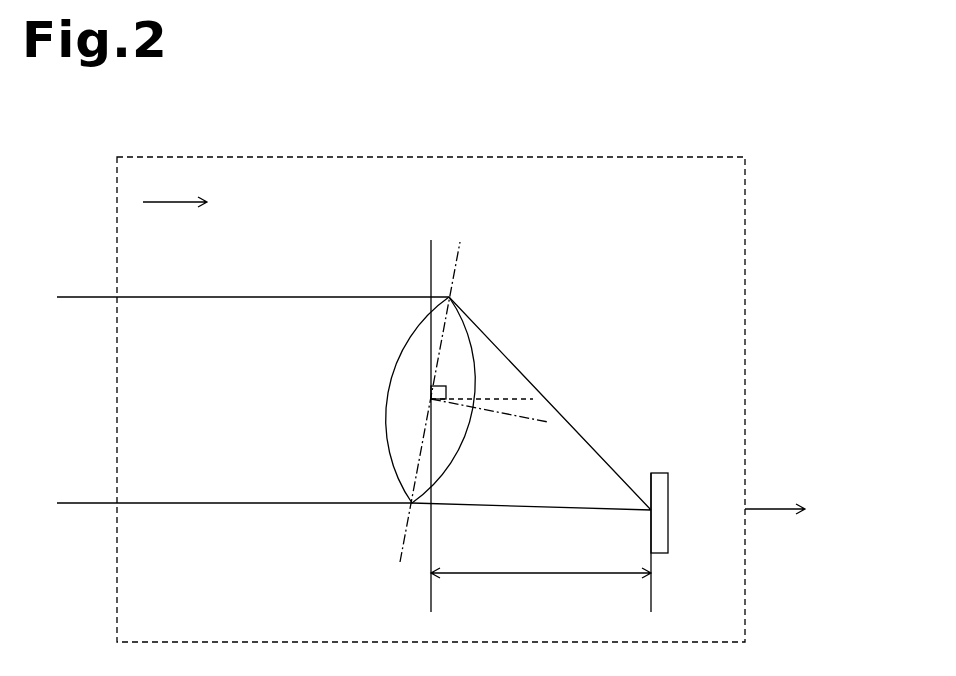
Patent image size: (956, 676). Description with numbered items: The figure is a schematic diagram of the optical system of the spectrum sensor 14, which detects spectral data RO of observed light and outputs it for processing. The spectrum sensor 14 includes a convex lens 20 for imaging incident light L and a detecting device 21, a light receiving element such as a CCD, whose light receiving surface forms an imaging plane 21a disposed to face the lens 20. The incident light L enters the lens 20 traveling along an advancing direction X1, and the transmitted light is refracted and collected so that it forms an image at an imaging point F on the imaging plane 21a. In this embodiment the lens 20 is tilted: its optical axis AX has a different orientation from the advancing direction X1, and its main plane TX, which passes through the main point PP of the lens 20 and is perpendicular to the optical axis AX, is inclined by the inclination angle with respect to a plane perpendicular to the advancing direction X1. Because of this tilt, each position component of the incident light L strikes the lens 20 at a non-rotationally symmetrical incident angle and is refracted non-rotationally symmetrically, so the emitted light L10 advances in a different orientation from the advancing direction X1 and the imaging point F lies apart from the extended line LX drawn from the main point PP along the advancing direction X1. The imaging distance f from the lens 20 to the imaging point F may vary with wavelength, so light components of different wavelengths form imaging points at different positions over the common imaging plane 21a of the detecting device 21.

The spectrum sensor 14 is at (709, 156).
The lens 20 is at (460, 325).
The detecting device 21 is at (668, 488).
The imaging plane 21a is at (651, 480).
The advancing direction X1 is at (196, 203).
The incident light L is at (282, 296).
The main plane TX is at (442, 382).
The main point PP is at (431, 399).
The extended line LX is at (510, 399).
The optical axis AX is at (525, 423).
The emitted light L10 is at (540, 393).
The imaging point F is at (649, 515).
The imaging distance f is at (541, 557).
The spectral data RO is at (799, 509).